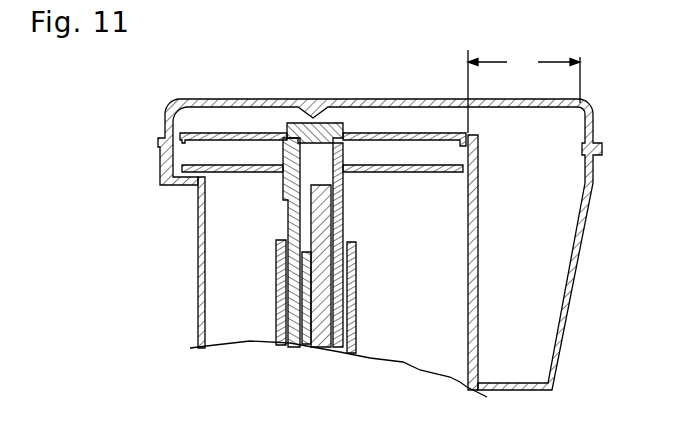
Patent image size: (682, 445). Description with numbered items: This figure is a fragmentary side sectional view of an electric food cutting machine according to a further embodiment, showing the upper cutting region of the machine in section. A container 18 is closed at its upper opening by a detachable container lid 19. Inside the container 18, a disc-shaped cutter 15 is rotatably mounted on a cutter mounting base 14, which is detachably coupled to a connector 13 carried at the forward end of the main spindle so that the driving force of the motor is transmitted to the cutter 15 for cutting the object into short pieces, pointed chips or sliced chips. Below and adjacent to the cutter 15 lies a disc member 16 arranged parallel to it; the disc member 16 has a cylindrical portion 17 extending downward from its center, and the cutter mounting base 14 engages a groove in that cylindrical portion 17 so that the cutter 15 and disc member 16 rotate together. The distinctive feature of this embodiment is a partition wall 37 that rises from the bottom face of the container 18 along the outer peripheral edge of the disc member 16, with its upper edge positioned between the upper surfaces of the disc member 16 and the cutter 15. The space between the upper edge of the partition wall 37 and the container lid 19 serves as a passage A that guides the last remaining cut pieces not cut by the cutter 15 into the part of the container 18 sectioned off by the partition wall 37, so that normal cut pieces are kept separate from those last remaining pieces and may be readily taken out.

The container lid 19 is at (273, 102).
The container 18 is at (198, 297).
The partition wall 37 is at (478, 272).
The disc-shaped cutter 15 is at (385, 133).
The disc member 16 is at (437, 173).
The cutter mounting base 14 is at (313, 127).
The cylindrical portion 17 is at (343, 212).
The connector 13 is at (330, 257).
The passage A is at (524, 91).